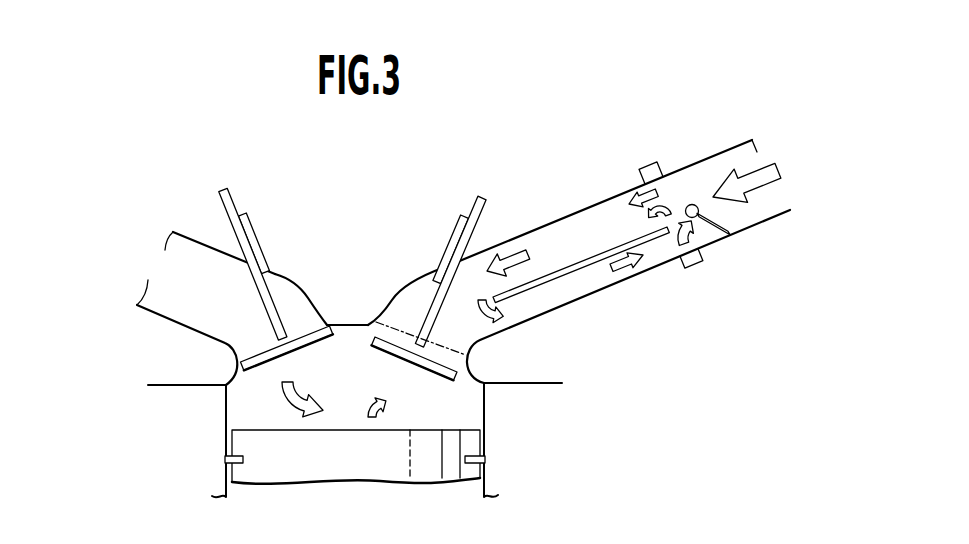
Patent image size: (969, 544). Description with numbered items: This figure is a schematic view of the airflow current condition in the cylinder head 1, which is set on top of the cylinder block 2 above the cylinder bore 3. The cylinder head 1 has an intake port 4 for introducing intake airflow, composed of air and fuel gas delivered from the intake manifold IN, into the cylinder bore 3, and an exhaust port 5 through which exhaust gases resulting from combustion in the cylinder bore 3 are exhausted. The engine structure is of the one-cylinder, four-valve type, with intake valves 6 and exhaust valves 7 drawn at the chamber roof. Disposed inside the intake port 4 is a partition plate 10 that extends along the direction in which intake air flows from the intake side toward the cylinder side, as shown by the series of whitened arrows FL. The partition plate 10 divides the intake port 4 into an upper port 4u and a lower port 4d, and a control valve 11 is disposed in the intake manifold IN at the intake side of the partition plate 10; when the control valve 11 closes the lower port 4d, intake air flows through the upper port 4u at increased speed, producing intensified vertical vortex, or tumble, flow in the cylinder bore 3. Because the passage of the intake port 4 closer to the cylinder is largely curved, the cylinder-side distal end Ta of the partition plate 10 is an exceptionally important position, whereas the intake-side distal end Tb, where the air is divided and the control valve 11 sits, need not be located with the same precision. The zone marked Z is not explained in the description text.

The cylinder head 1 is at (158, 354).
The cylinder block 2 is at (170, 436).
The cylinder bore 3 is at (413, 407).
The intake port 4 is at (545, 202).
The upper port 4u is at (604, 212).
The lower port 4d is at (661, 252).
The exhaust port 5 is at (148, 266).
The intake valve 6 is at (366, 323).
The exhaust valve 7 is at (303, 316).
The partition plate 10 is at (577, 265).
The control valve 11 is at (707, 240).
The central zone of combustion chamber Z is at (338, 247).
The cylinder-side distal end Ta is at (493, 298).
The intake-side distal end Tb is at (677, 210).
The intake manifold IN is at (772, 222).
The whitened arrows FL is at (293, 407).